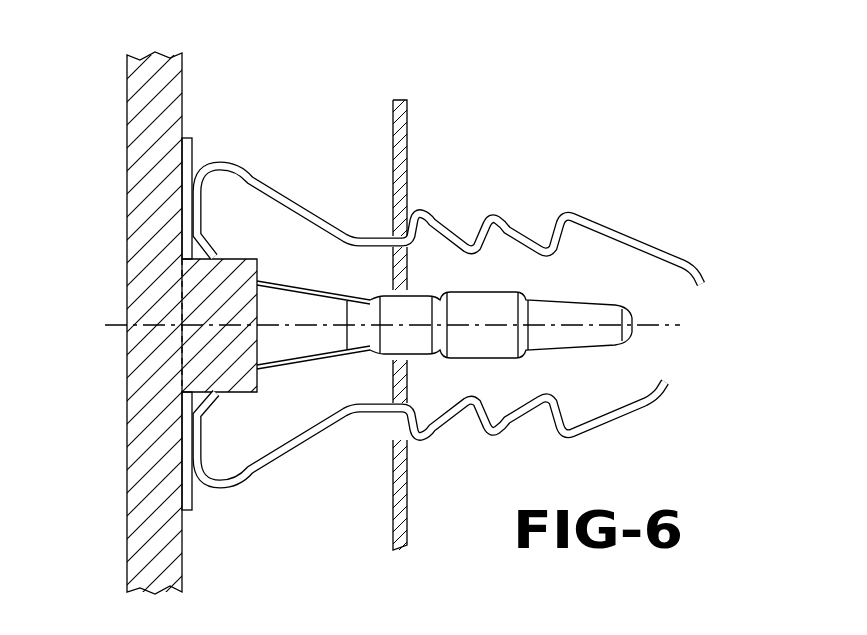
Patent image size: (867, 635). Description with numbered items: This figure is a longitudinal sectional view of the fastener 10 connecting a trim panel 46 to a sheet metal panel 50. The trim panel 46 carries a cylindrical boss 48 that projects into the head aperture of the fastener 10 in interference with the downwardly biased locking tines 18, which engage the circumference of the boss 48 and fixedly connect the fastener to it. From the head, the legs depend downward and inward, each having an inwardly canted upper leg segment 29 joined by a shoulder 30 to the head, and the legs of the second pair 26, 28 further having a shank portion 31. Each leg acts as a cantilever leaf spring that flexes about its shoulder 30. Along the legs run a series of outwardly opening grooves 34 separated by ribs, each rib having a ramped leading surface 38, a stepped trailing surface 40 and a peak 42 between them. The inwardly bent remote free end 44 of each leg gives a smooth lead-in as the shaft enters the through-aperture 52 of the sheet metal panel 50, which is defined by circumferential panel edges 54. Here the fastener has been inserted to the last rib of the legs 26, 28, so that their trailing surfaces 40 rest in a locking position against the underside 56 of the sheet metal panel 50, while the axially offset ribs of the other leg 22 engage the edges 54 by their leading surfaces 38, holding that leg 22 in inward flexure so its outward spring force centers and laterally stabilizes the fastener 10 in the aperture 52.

The fastener 10 is at (684, 140).
The locking tines 18 is at (220, 230).
The leg 22 is at (572, 312).
The leg 26 is at (636, 418).
The leg 28 is at (590, 218).
The upper leg segment 29 is at (255, 185).
The shoulder 30 is at (226, 152).
The shank portion 31 is at (370, 235).
The grooves 34 is at (547, 240).
The leading surface 38 is at (518, 244).
The trailing surface 40 is at (474, 237).
The peak 42 is at (420, 212).
The remote free end 44 is at (703, 270).
The trim panel 46 is at (135, 88).
The cylindrical boss 48 is at (237, 293).
The sheet metal panel 50 is at (397, 105).
The through-aperture 52 is at (384, 263).
The panel edges 54 is at (410, 403).
The underside 56 is at (395, 518).